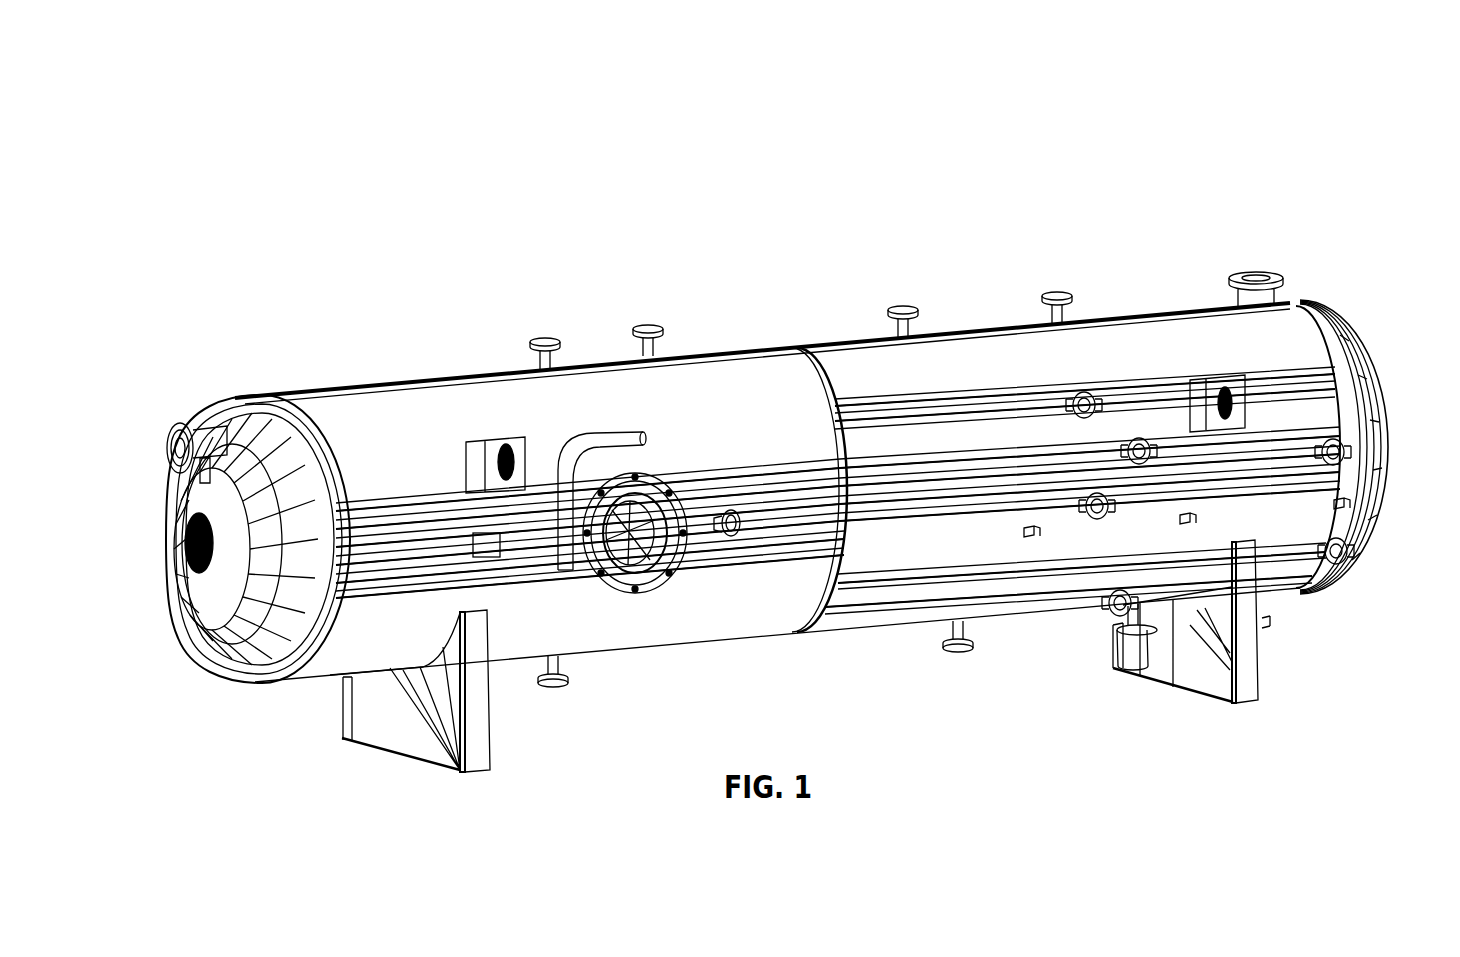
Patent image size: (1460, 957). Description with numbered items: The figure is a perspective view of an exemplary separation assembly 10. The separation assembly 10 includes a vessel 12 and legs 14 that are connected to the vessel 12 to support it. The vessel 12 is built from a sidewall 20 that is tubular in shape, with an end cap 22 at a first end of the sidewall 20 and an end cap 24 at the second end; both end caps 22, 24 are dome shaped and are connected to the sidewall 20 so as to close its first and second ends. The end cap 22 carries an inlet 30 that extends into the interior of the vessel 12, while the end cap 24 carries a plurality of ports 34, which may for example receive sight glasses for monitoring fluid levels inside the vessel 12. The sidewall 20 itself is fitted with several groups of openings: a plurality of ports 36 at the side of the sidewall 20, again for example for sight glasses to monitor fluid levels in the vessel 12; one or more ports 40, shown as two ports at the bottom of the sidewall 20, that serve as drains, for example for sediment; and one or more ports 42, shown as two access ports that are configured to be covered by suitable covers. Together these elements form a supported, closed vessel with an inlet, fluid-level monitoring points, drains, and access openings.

The separation assembly 10 is at (1192, 214).
The vessel 12 is at (839, 335).
The legs 14 is at (1212, 695).
The sidewall 20 is at (703, 388).
The end cap 22 is at (233, 407).
The end cap 24 is at (1318, 313).
The inlet 30 is at (170, 433).
The ports 34 is at (1360, 330).
The ports 36 is at (1089, 521).
The ports 40 is at (945, 653).
The ports 42 is at (663, 483).